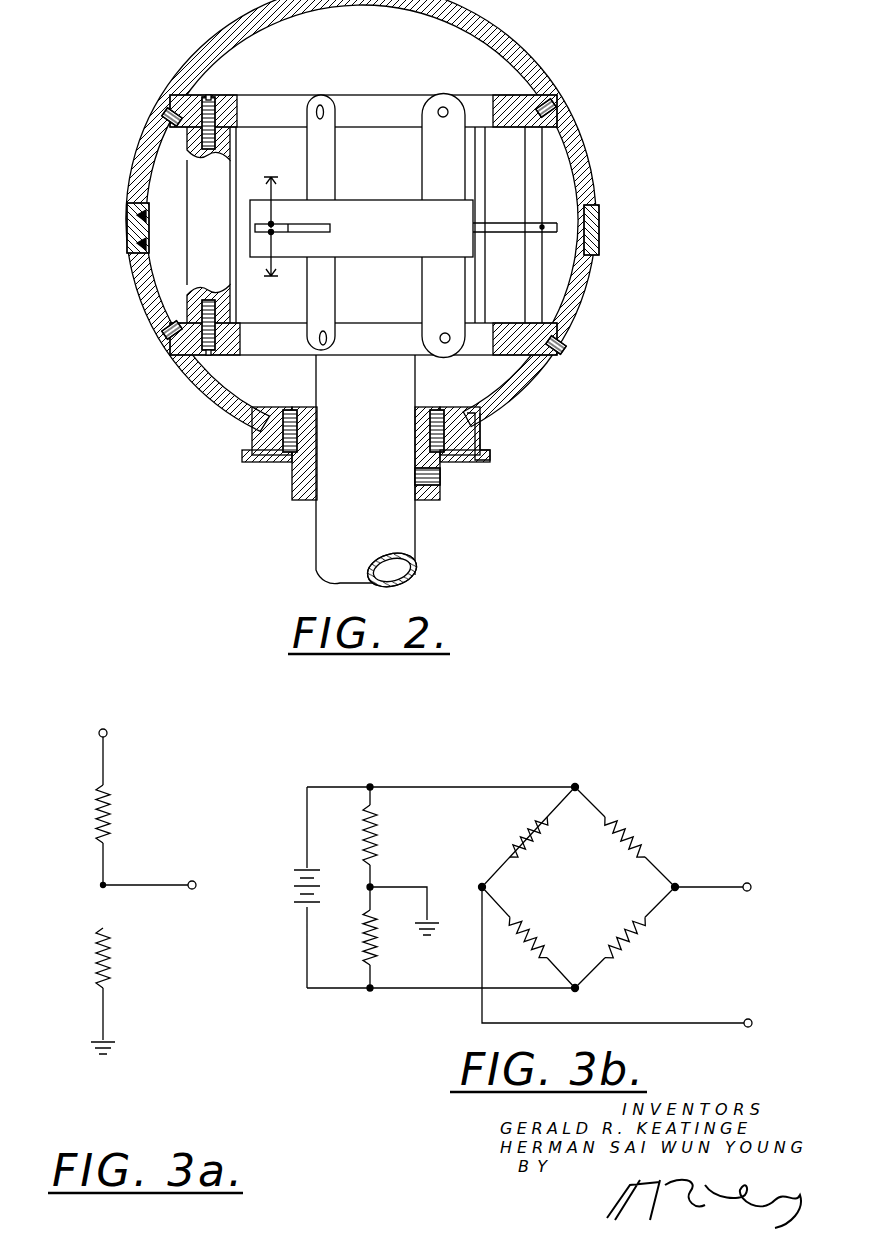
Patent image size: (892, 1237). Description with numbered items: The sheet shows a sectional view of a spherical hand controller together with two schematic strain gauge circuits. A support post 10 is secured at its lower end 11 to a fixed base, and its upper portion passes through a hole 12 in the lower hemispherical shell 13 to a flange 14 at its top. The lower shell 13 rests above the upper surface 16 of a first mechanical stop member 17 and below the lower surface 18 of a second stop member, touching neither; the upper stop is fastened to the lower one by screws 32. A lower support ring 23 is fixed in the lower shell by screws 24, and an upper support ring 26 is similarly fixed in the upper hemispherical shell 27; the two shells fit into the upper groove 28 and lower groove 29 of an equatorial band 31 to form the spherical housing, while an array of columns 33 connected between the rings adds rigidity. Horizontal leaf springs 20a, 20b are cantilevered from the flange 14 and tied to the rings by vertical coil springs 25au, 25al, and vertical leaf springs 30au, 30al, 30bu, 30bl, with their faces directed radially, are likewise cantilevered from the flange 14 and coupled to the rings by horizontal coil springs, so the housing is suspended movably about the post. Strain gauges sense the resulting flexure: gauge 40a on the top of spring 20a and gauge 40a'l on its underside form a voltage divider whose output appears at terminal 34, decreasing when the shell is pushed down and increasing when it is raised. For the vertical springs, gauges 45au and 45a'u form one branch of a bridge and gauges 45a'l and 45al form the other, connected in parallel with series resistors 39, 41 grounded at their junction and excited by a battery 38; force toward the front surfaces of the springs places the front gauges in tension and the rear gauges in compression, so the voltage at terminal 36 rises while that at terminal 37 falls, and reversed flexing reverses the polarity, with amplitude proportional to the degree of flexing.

In FIG. 2, the support post 10 is at (316, 542).
In FIG. 2, the lower end 11 is at (395, 572).
In FIG. 2, the hole 12 is at (250, 441).
In FIG. 2, the lower hemispherical shell 13 is at (160, 321).
In FIG. 2, the flange 14 is at (440, 236).
In FIG. 2, the upper surface 16 is at (490, 457).
In FIG. 2, the first mechanical stop member 17 is at (465, 468).
In FIG. 2, the lower surface 18 is at (490, 432).
In FIG. 2, the cantilevered beam 20a is at (330, 228).
In FIG. 2, the cantilevered beam 20b is at (557, 229).
In FIG. 2, the lower support ring 23 is at (515, 355).
In FIG. 2, the screws 24 is at (563, 345).
In FIG. 2, the coil spring 25au is at (268, 178).
In FIG. 2, the coil spring 25al is at (268, 278).
In FIG. 2, the upper support ring 26 is at (505, 97).
In FIG. 2, the upper hemispherical shell 27 is at (172, 122).
In FIG. 2, the upper groove 28 is at (147, 216).
In FIG. 2, the lower groove 29 is at (147, 243).
In FIG. 2, the leaf spring 30au is at (330, 97).
In FIG. 2, the leaf spring 30al is at (333, 272).
In FIG. 2, the leaf spring 30bu is at (422, 176).
In FIG. 2, the leaf spring 30bl is at (420, 336).
In FIG. 2, the equatorial band 31 is at (128, 228).
In FIG. 2, the screws 32 is at (432, 407).
In FIG. 2, the columns 33 is at (222, 224).
In FIG. 3a, the output terminal 34 is at (192, 881).
In FIG. 3b, the terminal 36 is at (750, 884).
In FIG. 3b, the terminal 37 is at (751, 1020).
In FIG. 3b, the battery 38 is at (317, 904).
In FIG. 3b, the series resistor 39 is at (380, 848).
In FIG. 3a, the strain gauge 40a is at (71, 814).
In FIG. 3a, the strain gauge 40a'l is at (64, 958).
In FIG. 3b, the series resistor 41 is at (382, 945).
In FIG. 3b, the strain gauge 45au is at (512, 848).
In FIG. 3b, the strain gauge 45a'l is at (649, 830).
In FIG. 3b, the strain gauge 45a'u is at (553, 925).
In FIG. 3b, the strain gauge 45al is at (640, 935).